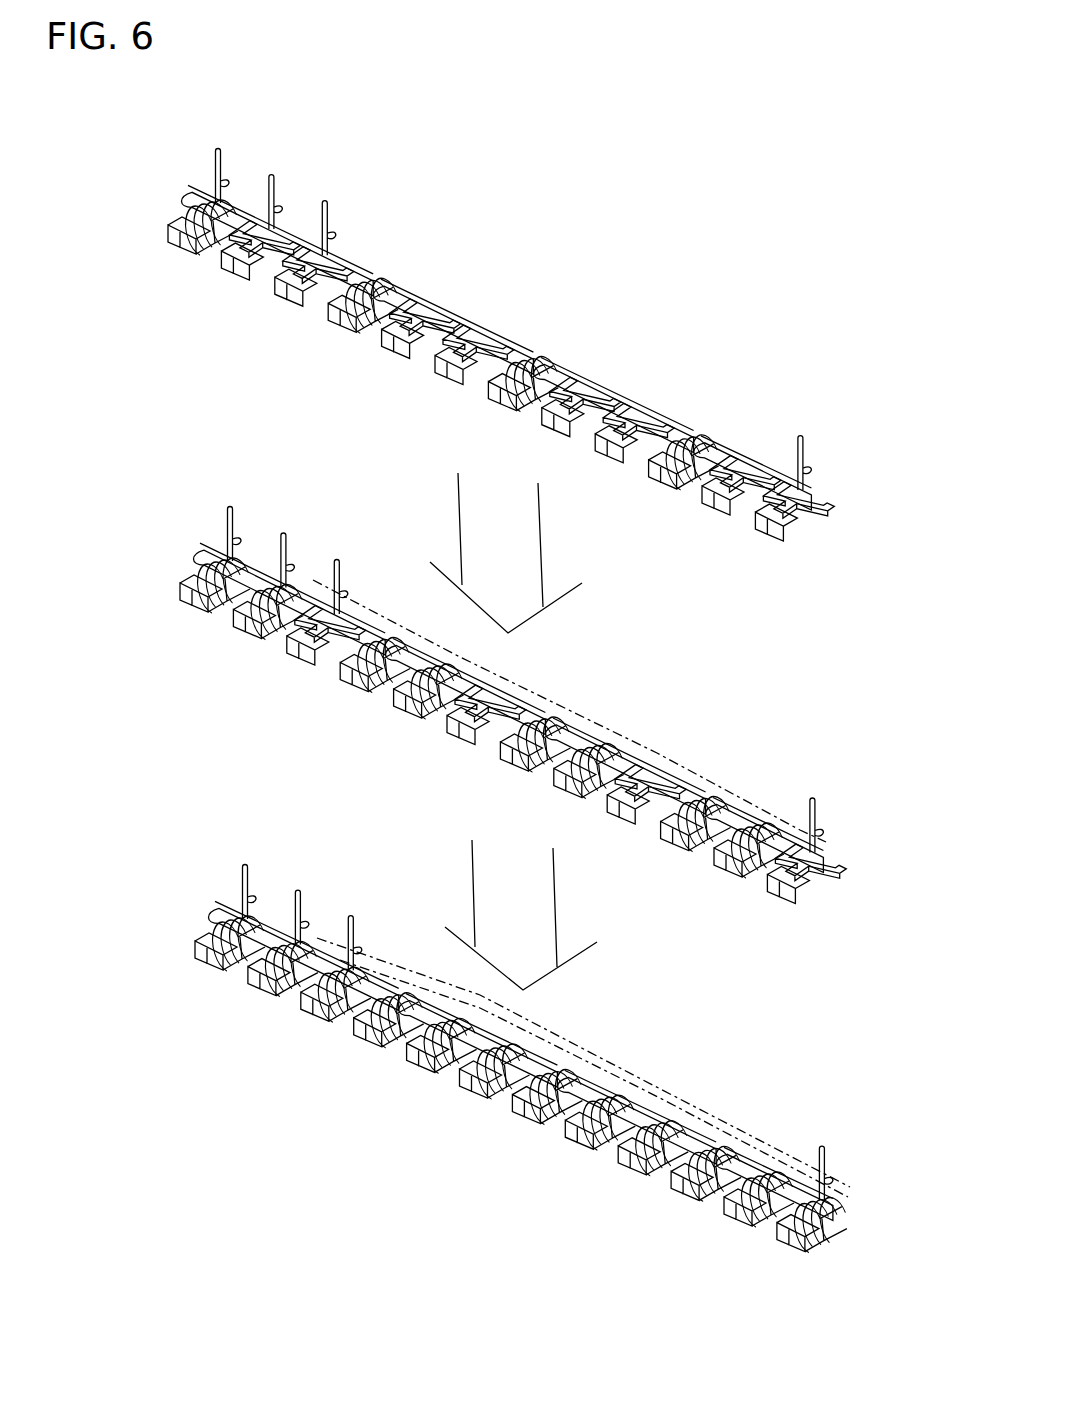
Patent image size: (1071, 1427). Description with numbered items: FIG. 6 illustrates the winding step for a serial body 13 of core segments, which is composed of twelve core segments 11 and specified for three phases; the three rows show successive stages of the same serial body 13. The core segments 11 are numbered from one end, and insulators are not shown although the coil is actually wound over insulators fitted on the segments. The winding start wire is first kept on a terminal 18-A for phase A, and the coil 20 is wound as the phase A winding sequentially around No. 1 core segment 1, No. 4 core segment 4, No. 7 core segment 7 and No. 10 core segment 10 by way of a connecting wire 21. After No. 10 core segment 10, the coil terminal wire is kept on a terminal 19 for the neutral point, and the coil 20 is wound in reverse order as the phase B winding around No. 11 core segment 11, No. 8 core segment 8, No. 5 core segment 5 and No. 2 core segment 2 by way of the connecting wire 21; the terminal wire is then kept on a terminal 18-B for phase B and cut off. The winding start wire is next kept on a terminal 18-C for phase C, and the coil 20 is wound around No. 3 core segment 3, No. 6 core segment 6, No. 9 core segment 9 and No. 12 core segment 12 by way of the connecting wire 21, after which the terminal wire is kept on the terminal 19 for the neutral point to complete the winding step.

The No. 1 core segment 1 is at (204, 587).
The No. 2 core segment 2 is at (257, 620).
The No. 3 core segment 3 is at (311, 645).
The No. 4 core segment 4 is at (364, 665).
The No. 5 core segment 5 is at (417, 697).
The No. 6 core segment 6 is at (470, 723).
The No. 7 core segment 7 is at (523, 742).
The No. 8 core segment 8 is at (577, 774).
The No. 9 core segment 9 is at (629, 800).
The No. 10 core segment 10 is at (683, 819).
The core segment 11 is at (813, 583).
The No. 12 core segment 12 is at (789, 878).
The serial body of core segments 13 is at (497, 345).
The terminal for phase A 18-A is at (229, 512).
The terminal for phase B 18-B is at (283, 540).
The terminal for phase C 18-C is at (348, 576).
The terminal for neutral point 19 is at (820, 840).
The coil 20 is at (696, 430).
The connecting wire 21 is at (352, 258).